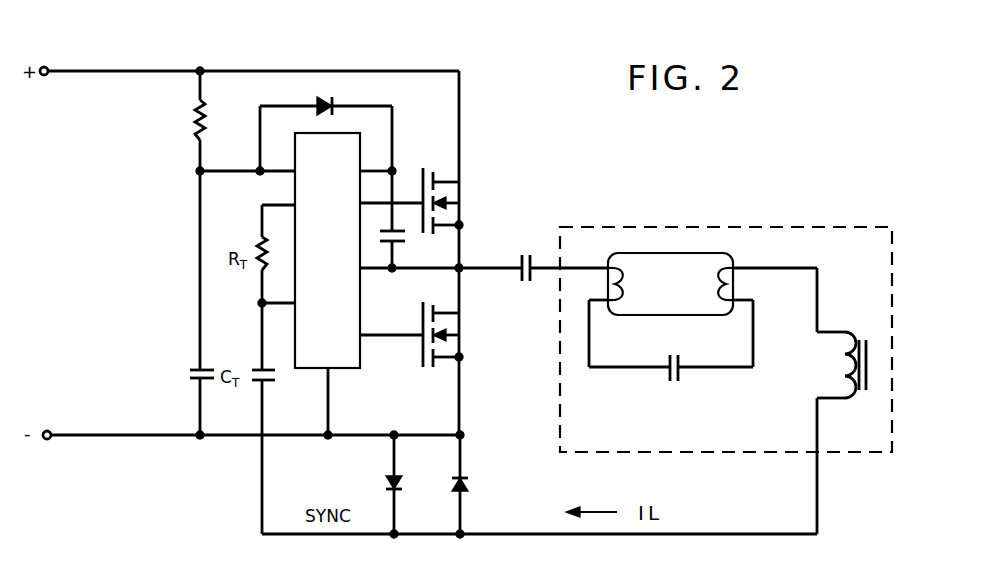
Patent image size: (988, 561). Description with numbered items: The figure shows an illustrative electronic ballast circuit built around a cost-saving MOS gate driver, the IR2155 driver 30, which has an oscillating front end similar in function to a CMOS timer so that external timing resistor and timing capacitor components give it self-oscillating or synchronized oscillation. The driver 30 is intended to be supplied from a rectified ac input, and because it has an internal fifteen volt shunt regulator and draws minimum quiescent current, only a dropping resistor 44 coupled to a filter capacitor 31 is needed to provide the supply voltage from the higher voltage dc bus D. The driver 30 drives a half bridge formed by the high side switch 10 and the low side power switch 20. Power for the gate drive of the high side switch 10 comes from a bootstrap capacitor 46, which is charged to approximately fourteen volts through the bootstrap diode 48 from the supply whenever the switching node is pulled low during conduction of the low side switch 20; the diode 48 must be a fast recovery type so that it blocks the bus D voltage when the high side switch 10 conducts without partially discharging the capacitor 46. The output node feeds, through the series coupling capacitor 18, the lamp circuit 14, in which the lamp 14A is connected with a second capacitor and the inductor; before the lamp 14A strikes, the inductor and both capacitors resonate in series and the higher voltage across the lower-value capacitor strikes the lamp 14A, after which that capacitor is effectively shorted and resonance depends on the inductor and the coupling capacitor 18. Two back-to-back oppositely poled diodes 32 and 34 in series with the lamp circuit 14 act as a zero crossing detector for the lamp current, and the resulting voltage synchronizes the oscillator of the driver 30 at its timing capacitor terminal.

The high side switch 10 is at (470, 197).
The lamp circuit 14 is at (726, 227).
The lamp 14A is at (643, 253).
The capacitor C1 18 is at (527, 251).
The low side power switch 20 is at (465, 328).
The IR2155 MOS gate driver 30 is at (360, 356).
The filter capacitor 31 is at (186, 376).
The diode 32 is at (386, 487).
The diode 34 is at (475, 488).
The dropping resistor 44 is at (195, 120).
The bootstrap capacitor 46 is at (399, 244).
The bootstrap diode 48 is at (323, 97).
The dc bus D is at (385, 68).